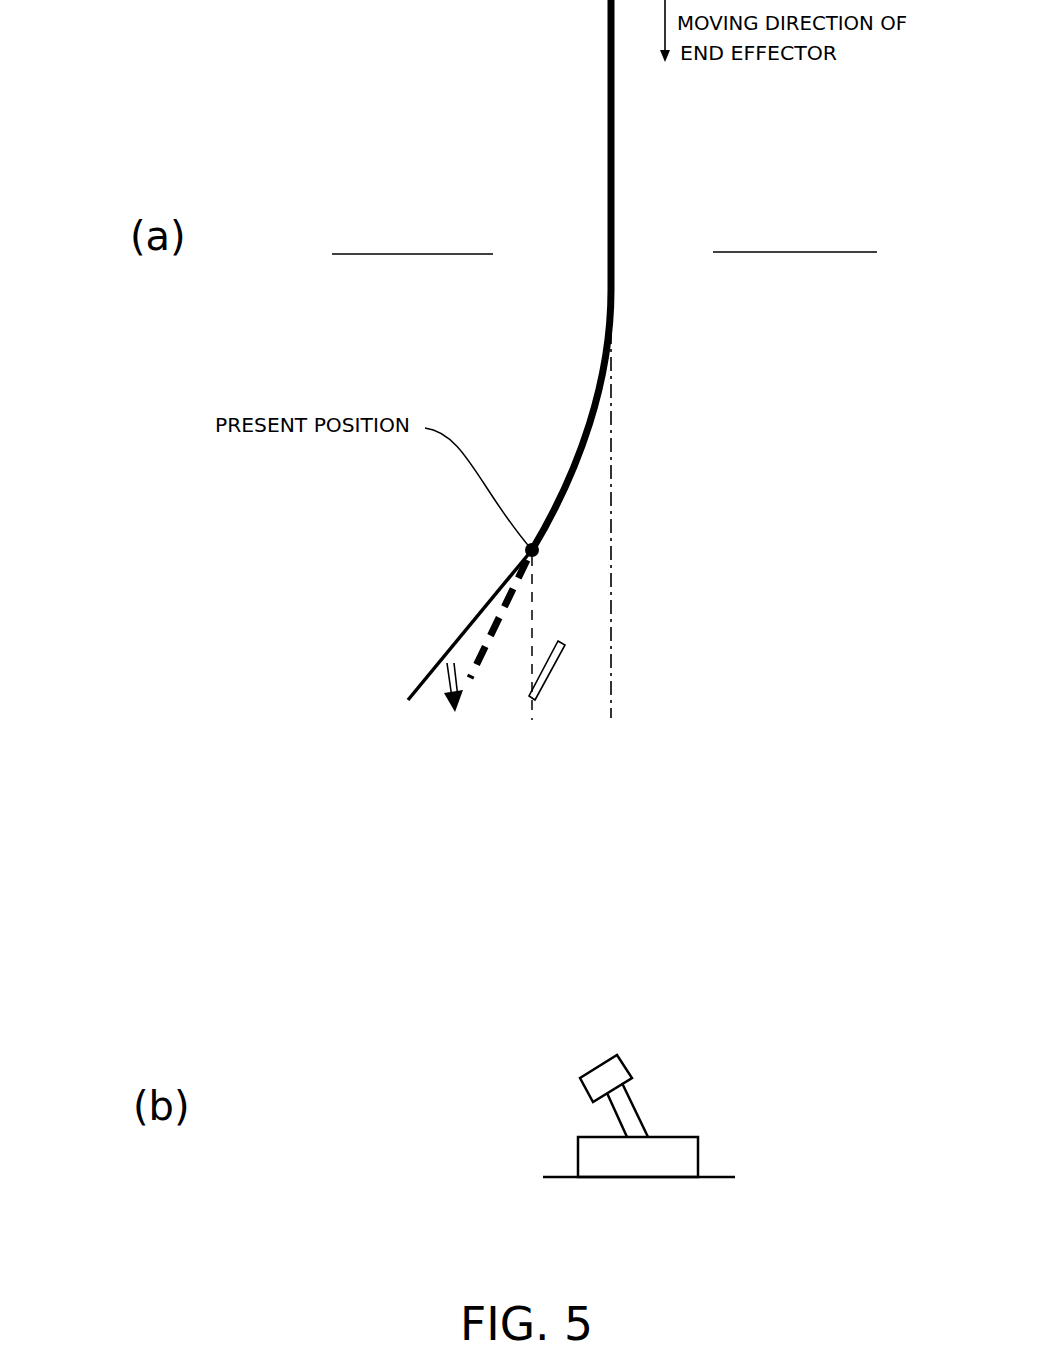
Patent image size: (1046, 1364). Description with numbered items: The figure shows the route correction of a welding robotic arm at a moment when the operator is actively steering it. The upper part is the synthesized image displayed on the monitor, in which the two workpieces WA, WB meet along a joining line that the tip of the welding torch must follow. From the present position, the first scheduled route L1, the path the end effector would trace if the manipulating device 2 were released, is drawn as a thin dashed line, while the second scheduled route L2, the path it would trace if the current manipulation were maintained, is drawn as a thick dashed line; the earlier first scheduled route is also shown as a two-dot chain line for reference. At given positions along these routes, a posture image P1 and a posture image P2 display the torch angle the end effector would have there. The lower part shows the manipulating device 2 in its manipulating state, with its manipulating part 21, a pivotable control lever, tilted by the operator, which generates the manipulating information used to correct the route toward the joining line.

The manipulating device 2 is at (545, 998).
The manipulating part 21 is at (595, 1065).
The first scheduled route L1 is at (532, 618).
The second scheduled route L2 is at (468, 620).
The posture image P1 is at (545, 686).
The posture image P2 is at (449, 692).
The workpiece WA is at (412, 243).
The workpiece WB is at (795, 241).